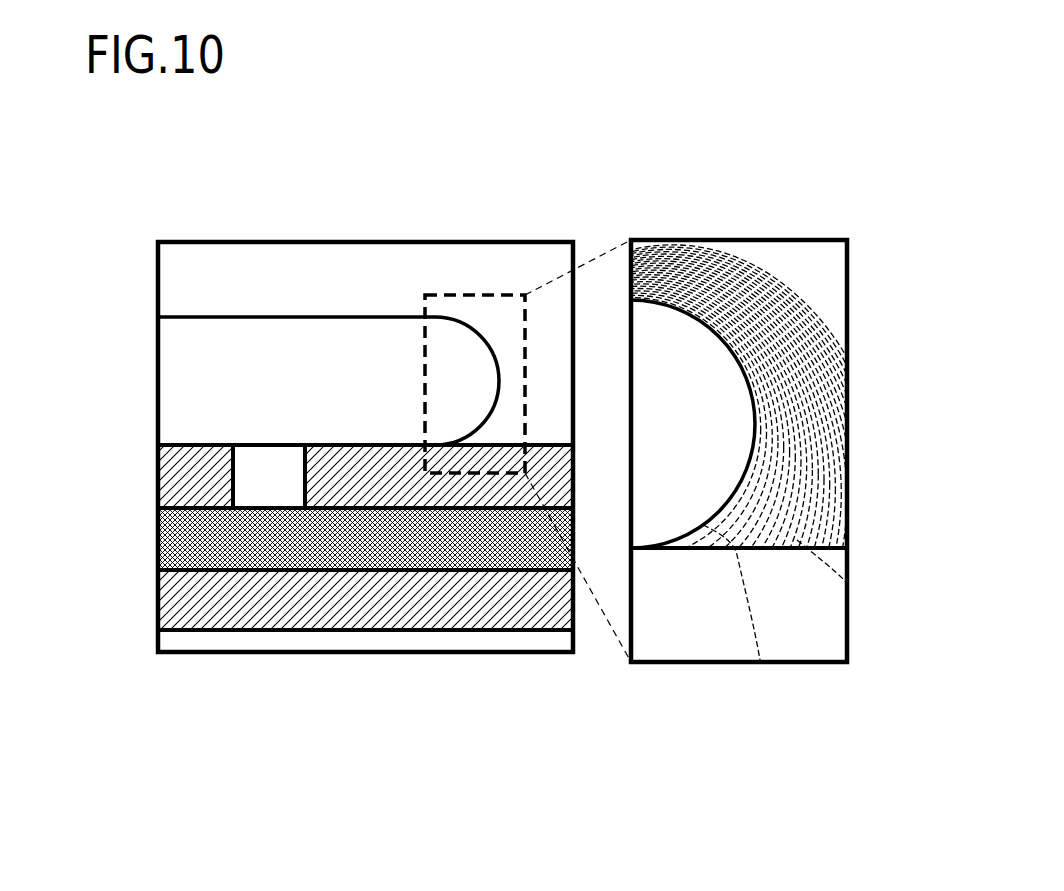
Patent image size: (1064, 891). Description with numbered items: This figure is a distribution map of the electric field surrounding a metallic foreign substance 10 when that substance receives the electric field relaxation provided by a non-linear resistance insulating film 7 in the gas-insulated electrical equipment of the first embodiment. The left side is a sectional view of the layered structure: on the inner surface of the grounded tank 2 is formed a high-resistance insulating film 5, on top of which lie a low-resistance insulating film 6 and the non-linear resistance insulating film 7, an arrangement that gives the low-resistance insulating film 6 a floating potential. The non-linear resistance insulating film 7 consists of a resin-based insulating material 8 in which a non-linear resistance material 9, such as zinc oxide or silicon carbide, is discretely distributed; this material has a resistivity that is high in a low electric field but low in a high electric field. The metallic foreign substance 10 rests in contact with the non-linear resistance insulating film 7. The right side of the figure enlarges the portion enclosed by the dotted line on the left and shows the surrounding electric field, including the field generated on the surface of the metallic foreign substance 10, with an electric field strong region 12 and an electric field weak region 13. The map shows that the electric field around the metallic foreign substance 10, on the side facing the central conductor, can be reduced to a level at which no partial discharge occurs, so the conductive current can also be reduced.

The grounded tank 2 is at (165, 639).
The high-resistance insulating film 5 is at (177, 603).
The low-resistance insulating film 6 is at (183, 547).
The non-linear resistance insulating film 7 is at (299, 443).
The resin-based insulating material 8 is at (185, 488).
The non-linear resistance material 9 is at (247, 482).
The metallic foreign substance 10 is at (180, 343).
The electric field strong region 12 is at (672, 240).
The electric field weak region 13 is at (784, 575).